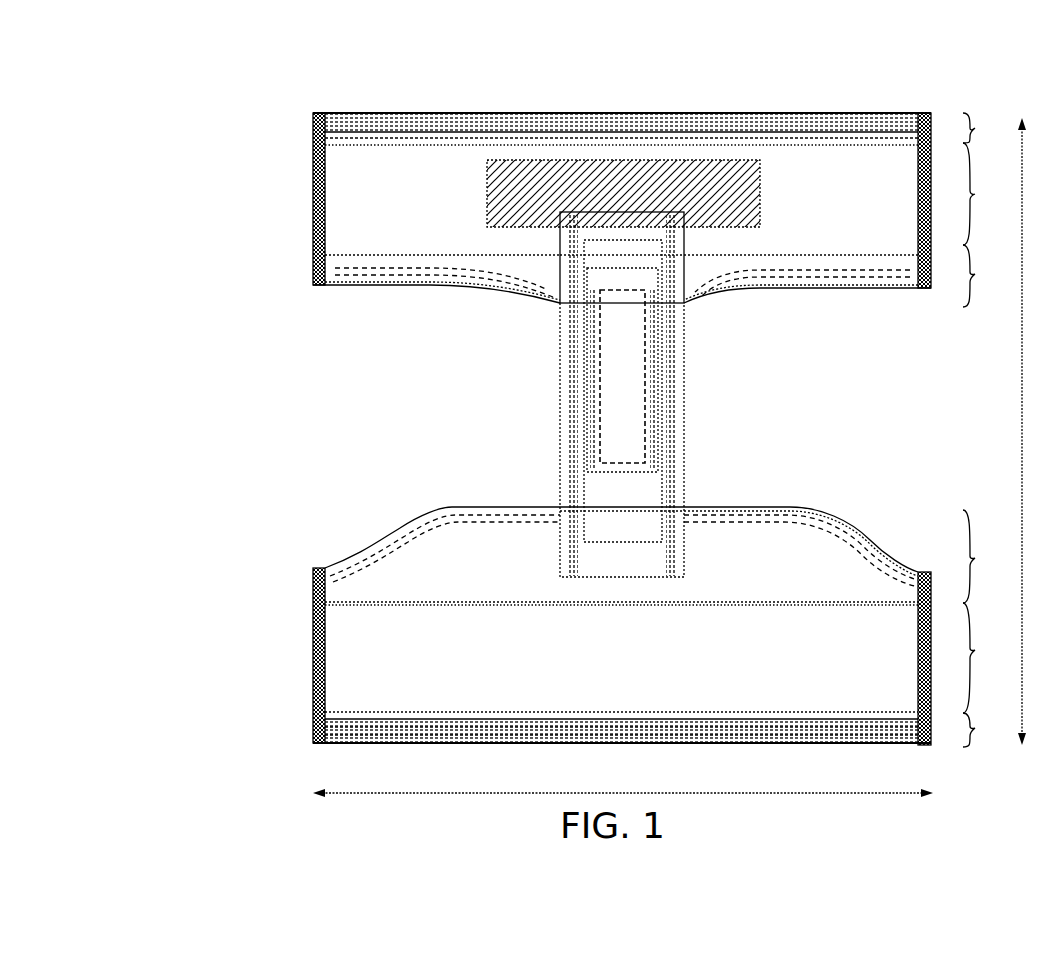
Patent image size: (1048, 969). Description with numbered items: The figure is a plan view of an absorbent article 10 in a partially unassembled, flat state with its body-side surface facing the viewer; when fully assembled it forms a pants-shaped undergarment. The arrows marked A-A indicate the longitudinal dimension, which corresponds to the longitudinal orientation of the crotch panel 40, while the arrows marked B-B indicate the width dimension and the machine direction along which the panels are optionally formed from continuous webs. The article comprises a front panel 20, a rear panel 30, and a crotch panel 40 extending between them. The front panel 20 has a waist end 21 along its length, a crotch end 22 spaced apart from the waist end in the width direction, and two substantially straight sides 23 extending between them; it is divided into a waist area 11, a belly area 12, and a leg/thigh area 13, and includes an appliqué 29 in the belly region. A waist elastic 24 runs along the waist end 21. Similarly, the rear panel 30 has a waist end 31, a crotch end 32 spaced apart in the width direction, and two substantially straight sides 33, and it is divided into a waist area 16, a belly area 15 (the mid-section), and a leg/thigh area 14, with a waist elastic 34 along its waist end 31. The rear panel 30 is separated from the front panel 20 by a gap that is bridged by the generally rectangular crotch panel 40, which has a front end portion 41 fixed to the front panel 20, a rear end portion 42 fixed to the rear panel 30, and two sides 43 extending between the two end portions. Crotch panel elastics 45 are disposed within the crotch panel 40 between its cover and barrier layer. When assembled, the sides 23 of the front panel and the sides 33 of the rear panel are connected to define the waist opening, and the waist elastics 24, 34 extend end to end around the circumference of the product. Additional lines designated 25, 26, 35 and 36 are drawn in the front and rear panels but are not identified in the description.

The absorbent article 10 is at (165, 171).
The waist area 11 is at (985, 128).
The belly area 12 is at (985, 194).
The leg/thigh area 13 is at (985, 276).
The leg/thigh area 14 is at (985, 556).
The belly area 15 is at (985, 658).
The waist area 16 is at (985, 730).
The front panel 20 is at (866, 160).
The waist end 21 is at (583, 125).
The crotch end 22 is at (368, 287).
The sides 23 is at (313, 197).
The waist elastic 24 is at (740, 125).
The absorbent core 25 is at (450, 178).
The adhesive layer 26 is at (430, 282).
The appliqué 29 is at (648, 178).
The rear panel 30 is at (345, 620).
The waist end 31 is at (466, 745).
The crotch end 32 is at (402, 530).
The sides 33 is at (313, 678).
The waist elastic 34 is at (780, 745).
The absorbent core of second component 35 is at (350, 646).
The acquisition layer of second component 36 is at (876, 550).
The crotch panel 40 is at (650, 366).
The front end portion 41 is at (683, 228).
The rear end portion 42 is at (645, 518).
The sides 43 is at (687, 417).
The crotch panel elastics 45 is at (687, 334).